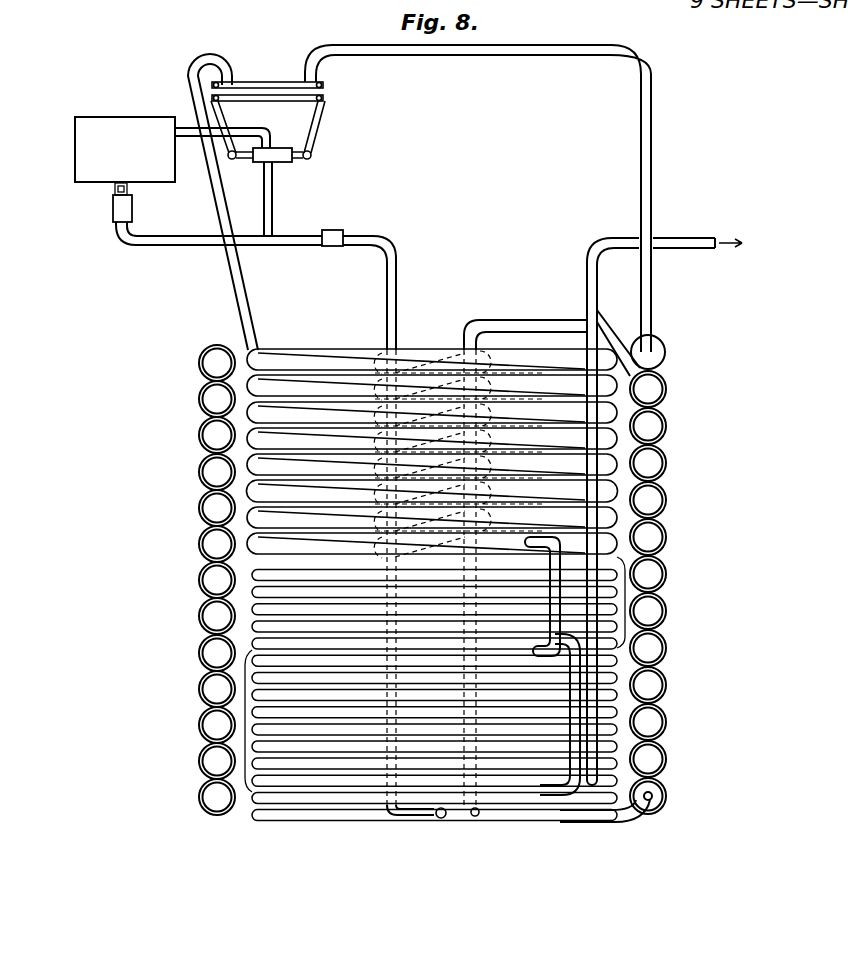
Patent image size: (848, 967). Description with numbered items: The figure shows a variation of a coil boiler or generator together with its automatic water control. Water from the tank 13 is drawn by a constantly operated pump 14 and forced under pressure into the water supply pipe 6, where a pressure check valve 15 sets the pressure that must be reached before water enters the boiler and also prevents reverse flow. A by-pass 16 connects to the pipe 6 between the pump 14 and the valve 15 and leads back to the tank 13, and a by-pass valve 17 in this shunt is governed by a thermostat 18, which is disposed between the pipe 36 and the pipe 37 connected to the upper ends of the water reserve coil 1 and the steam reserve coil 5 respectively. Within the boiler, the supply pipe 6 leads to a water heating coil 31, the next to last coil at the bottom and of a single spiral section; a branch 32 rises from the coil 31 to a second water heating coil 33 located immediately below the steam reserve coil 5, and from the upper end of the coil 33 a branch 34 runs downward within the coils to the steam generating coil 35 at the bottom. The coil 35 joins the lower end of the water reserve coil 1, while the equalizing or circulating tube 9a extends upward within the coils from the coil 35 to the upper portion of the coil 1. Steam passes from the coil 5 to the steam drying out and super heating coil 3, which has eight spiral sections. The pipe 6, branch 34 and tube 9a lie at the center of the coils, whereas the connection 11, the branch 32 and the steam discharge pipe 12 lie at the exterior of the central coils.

The water reserve coil 1 is at (205, 543).
The steam drying out and super heating coil 3 is at (244, 722).
The steam reserve coil 5 is at (243, 457).
The water supply pipe 6 is at (400, 252).
The equalizing or circulating tube 9a is at (524, 320).
The connection 11 is at (557, 550).
The steam discharge pipe 12 is at (700, 238).
The tank 13 is at (112, 130).
The pump 14 is at (113, 208).
The pressure check valve 15 is at (340, 230).
The by-pass 16 is at (273, 207).
The by-pass valve 17 is at (285, 157).
The thermostat 18 is at (268, 82).
The water heating coil 31 is at (253, 800).
The branch 32 is at (572, 798).
The water heating coil 33 is at (628, 603).
The branch 34 is at (425, 806).
The steam generating coil 35 is at (497, 808).
The pipe 36 is at (652, 125).
The pipe 37 is at (227, 283).